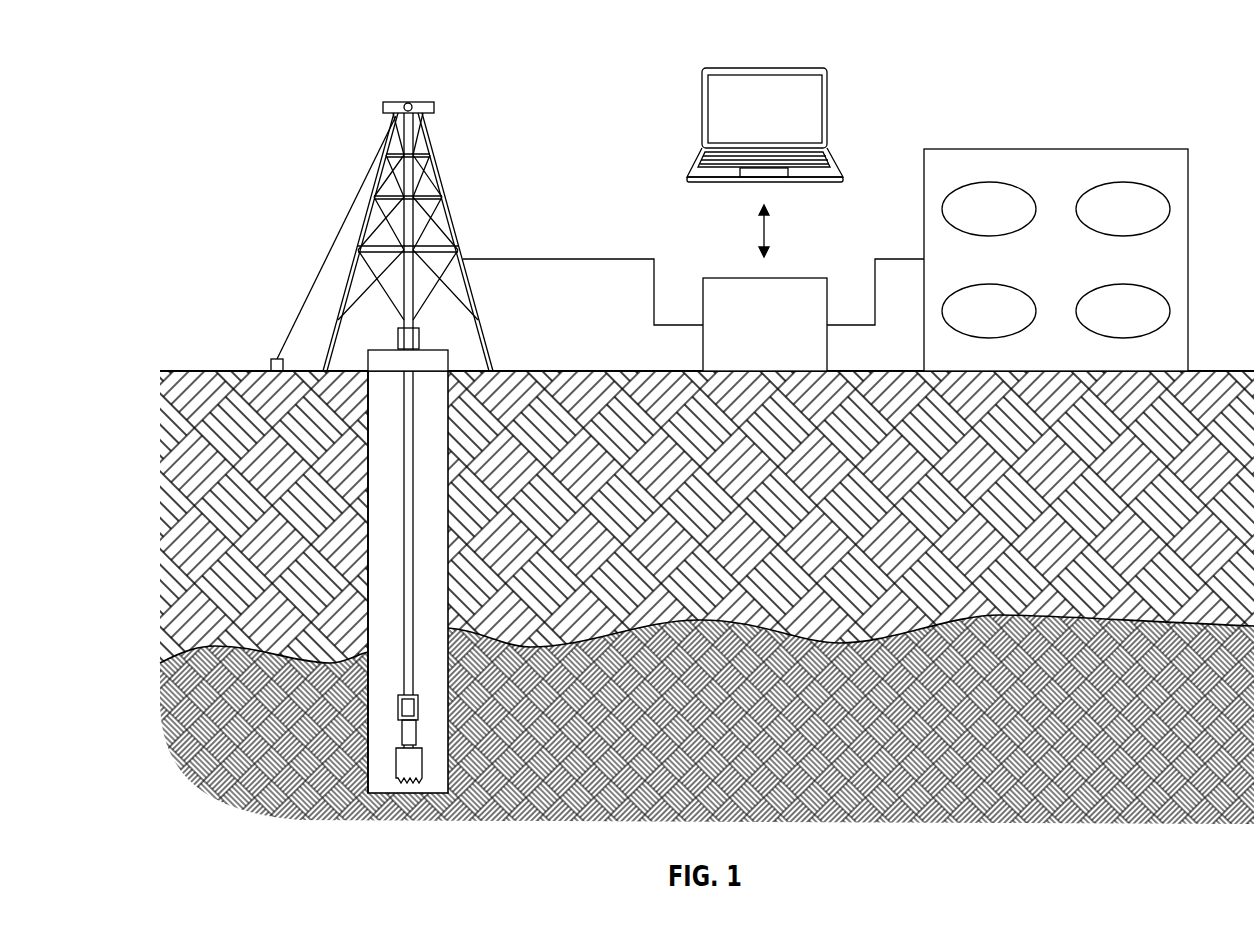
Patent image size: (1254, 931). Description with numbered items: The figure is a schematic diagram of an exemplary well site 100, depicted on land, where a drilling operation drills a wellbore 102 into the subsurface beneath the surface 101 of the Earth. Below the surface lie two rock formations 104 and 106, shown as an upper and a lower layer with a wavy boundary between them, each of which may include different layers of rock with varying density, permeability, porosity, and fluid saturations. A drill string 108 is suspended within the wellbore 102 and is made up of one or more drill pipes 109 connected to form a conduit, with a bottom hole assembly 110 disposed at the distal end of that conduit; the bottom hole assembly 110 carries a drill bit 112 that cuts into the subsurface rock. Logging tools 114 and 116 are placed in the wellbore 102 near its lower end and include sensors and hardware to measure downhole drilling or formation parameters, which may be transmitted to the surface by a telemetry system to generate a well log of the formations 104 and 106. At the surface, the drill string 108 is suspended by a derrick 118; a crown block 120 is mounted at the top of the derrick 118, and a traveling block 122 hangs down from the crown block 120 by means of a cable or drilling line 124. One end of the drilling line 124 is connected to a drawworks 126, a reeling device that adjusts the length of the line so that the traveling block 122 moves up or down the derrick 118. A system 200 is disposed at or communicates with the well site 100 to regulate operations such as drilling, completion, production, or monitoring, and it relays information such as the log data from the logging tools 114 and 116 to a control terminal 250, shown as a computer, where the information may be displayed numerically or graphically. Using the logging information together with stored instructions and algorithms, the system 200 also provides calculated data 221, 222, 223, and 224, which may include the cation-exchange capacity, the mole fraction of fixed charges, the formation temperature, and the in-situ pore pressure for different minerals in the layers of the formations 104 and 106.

The well site 100 is at (302, 92).
The surface 101 is at (214, 371).
The wellbore 102 is at (368, 517).
The formation 104 is at (562, 527).
The formation 106 is at (689, 732).
The drill string 108 is at (413, 458).
The drill pipe 109 is at (403, 413).
The bottom hole assembly 110 is at (398, 745).
The drill bit 112 is at (395, 773).
The logging tool 114 is at (418, 710).
The logging tool 116 is at (420, 732).
The derrick 118 is at (452, 216).
The crown block 120 is at (424, 101).
The traveling block 122 is at (420, 338).
The drilling line 124 is at (408, 180).
The drawworks 126 is at (277, 358).
The system 200 is at (793, 278).
The calculated data 221 is at (969, 225).
The calculated data 222 is at (1103, 225).
The calculated data 223 is at (969, 327).
The calculated data 224 is at (1103, 327).
The control terminal 250 is at (768, 70).